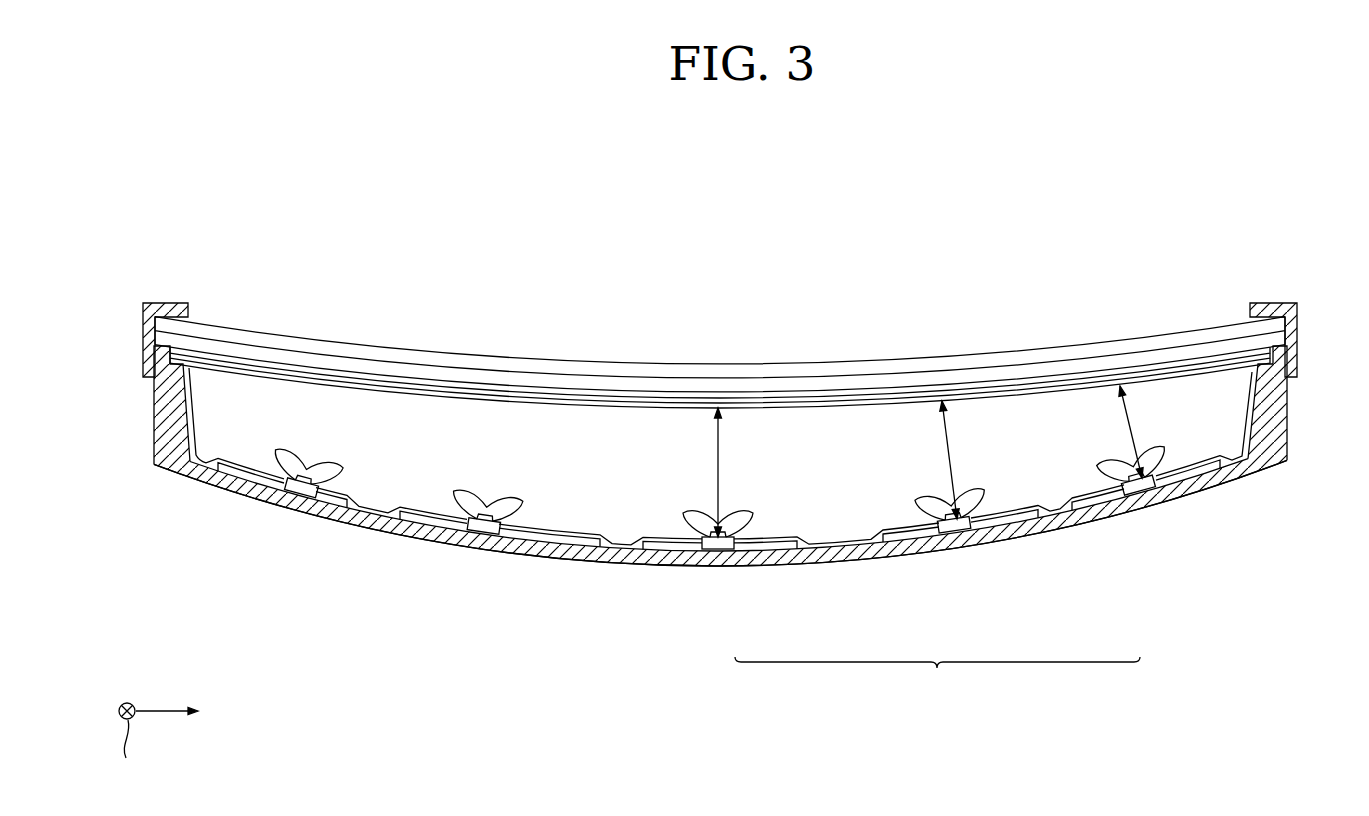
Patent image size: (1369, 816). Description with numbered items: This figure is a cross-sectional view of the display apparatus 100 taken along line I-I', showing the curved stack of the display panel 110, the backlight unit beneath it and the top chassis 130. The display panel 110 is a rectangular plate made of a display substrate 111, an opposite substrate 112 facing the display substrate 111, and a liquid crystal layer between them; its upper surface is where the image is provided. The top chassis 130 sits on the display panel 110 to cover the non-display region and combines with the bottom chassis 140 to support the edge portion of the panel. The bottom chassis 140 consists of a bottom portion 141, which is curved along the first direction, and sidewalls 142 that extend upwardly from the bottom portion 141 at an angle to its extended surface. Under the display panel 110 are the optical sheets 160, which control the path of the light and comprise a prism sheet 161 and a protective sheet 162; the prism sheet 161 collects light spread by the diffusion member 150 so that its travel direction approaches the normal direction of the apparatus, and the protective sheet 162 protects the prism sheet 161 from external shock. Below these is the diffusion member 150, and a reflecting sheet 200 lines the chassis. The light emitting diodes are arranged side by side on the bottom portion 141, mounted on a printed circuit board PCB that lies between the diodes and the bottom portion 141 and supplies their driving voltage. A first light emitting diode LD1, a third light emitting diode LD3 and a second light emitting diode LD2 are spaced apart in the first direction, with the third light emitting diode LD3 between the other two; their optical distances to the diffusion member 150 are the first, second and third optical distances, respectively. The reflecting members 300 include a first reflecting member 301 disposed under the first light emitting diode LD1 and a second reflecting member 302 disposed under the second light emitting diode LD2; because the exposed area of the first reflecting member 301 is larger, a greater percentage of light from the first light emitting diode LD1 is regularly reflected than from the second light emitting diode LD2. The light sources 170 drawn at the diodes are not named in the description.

The display apparatus 100 is at (1172, 306).
The display panel 110 is at (243, 271).
The display substrate 111 is at (277, 353).
The opposite substrate 112 is at (340, 347).
The top chassis 130 is at (1270, 305).
The bottom chassis 140 is at (370, 595).
The bottom portion 141 is at (348, 515).
The sidewalls 142 is at (160, 408).
The diffusion member 150 is at (588, 402).
The optical sheets 160 is at (515, 287).
The prism sheet 161 is at (525, 393).
The protective sheet 162 is at (460, 382).
The light source 170 is at (703, 516).
The reflecting sheet 200 is at (1262, 413).
The reflecting members 300 is at (918, 530).
The first reflecting member 301 is at (650, 565).
The second reflecting member 302 is at (1215, 462).
The printed circuit board PCB is at (696, 552).
The first light emitting diode LD1 is at (724, 549).
The second light emitting diode LD2 is at (1141, 490).
The third light emitting diode LD3 is at (962, 530).